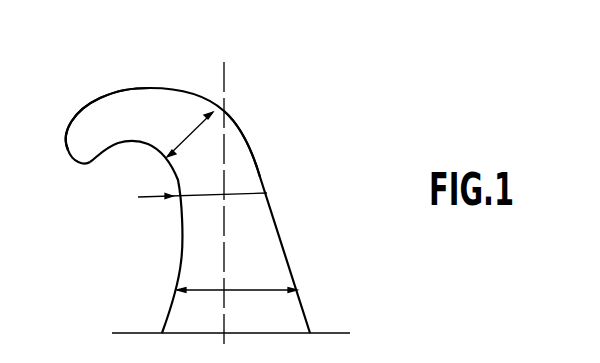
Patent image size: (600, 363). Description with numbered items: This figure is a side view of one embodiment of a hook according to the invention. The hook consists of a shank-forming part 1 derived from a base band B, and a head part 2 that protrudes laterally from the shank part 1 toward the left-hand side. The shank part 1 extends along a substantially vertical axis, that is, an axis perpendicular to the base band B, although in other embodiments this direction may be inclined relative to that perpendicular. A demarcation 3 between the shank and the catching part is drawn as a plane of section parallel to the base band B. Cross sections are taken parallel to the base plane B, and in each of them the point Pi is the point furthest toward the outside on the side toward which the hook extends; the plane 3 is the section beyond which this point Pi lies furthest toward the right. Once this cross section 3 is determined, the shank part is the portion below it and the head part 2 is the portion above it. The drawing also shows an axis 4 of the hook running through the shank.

The shank-forming part 1 is at (240, 243).
The head part 2 is at (140, 120).
The demarcation plane 3 is at (242, 193).
The centerline axis 4 is at (225, 100).
The point of the cross section Pi is at (191, 198).
The base band B is at (325, 333).